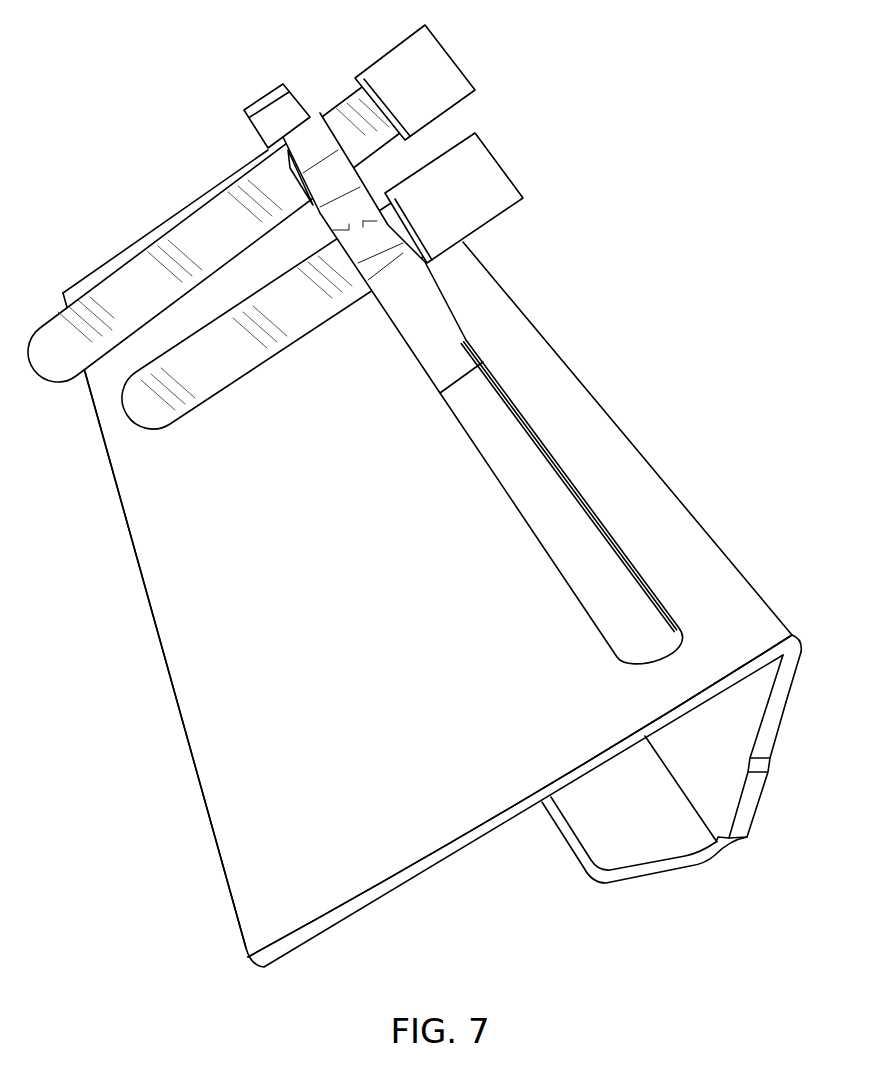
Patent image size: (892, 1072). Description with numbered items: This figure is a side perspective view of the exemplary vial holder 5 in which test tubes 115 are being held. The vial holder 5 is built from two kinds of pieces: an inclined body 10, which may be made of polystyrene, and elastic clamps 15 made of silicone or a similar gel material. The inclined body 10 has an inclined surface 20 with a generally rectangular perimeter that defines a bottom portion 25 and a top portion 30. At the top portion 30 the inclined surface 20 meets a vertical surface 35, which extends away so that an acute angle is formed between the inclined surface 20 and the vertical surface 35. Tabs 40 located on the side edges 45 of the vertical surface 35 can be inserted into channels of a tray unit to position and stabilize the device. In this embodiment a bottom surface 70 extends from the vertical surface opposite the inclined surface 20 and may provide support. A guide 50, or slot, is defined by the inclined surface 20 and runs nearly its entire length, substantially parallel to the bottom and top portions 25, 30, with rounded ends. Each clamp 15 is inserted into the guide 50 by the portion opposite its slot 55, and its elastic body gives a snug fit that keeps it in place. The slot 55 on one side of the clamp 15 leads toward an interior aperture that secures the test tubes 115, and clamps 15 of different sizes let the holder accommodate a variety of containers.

The vial holder 5 is at (179, 101).
The inclined body 10 is at (495, 884).
The clamp 15 is at (418, 340).
The inclined surface 20 is at (175, 487).
The bottom portion 25 is at (151, 608).
The top portion 30 is at (533, 340).
The vertical surface 35 is at (792, 675).
The tab 40 is at (745, 813).
The side edge 45 is at (773, 714).
The guide 50 is at (582, 494).
The slot 55 is at (288, 156).
The bottom surface 70 is at (633, 850).
The test tube 115 is at (230, 252).